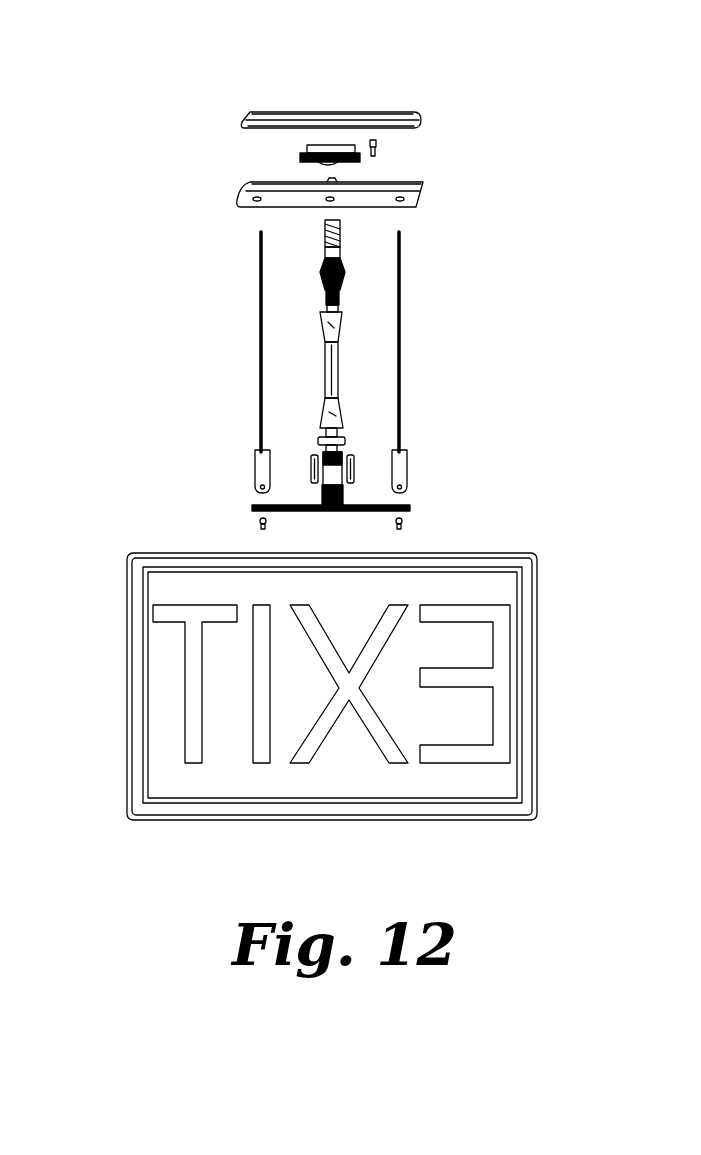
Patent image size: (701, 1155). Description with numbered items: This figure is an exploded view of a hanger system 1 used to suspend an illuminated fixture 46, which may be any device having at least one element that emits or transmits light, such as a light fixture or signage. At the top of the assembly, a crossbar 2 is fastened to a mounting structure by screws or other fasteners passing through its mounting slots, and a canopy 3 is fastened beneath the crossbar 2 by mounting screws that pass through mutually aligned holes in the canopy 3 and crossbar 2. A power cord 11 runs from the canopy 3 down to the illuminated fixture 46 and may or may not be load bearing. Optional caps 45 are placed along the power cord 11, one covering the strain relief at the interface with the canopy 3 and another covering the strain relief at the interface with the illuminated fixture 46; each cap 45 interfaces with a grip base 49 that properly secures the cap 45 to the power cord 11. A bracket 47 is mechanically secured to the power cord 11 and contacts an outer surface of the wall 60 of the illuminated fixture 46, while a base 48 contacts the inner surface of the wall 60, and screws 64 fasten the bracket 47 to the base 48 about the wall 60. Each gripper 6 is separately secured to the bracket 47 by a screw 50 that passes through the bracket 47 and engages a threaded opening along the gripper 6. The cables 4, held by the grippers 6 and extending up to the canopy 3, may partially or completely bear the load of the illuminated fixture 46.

The hanger system 1 is at (208, 52).
The crossbar 2 is at (404, 110).
The canopy 3 is at (420, 188).
The cables 4 is at (260, 290).
The gripper 6 is at (255, 482).
The power cord 11 is at (332, 372).
The cap 45 is at (322, 322).
The illuminated fixture 46 is at (127, 720).
The bracket 47 is at (252, 508).
The base 48 is at (290, 607).
The grip base 49 is at (337, 265).
The screw 50 is at (258, 522).
The wall 60 is at (377, 553).
The screws 64 is at (310, 469).